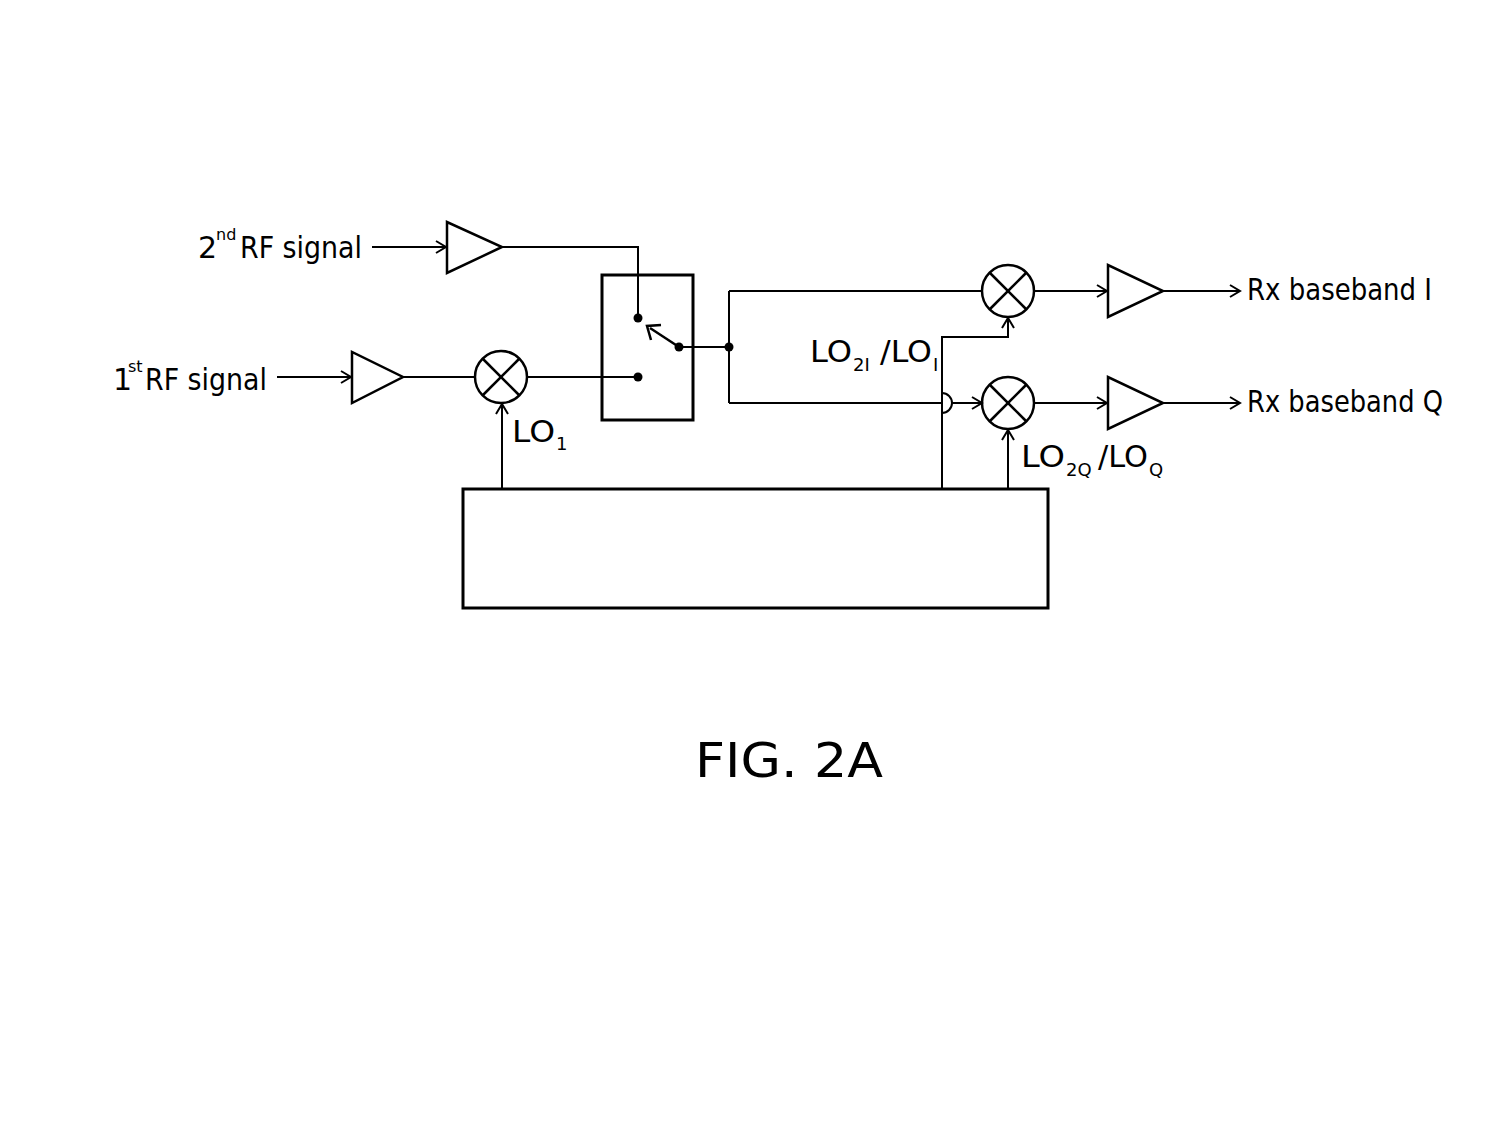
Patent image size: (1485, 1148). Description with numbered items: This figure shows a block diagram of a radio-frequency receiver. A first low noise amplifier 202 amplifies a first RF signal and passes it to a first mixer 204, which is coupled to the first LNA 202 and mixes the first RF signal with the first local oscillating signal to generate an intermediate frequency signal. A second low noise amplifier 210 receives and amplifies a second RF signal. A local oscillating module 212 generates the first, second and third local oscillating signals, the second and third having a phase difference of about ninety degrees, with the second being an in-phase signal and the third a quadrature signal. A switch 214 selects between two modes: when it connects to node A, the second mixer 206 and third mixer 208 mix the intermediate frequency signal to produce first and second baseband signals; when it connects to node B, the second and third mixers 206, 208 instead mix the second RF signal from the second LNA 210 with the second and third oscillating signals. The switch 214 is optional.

The first low noise amplifier 202 is at (380, 362).
The first mixer 204 is at (500, 352).
The second mixer 206 is at (1003, 265).
The third mixer 208 is at (1003, 377).
The second low noise amplifier 210 is at (473, 223).
The local oscillating module 212 is at (1048, 546).
The switch 214 is at (665, 273).